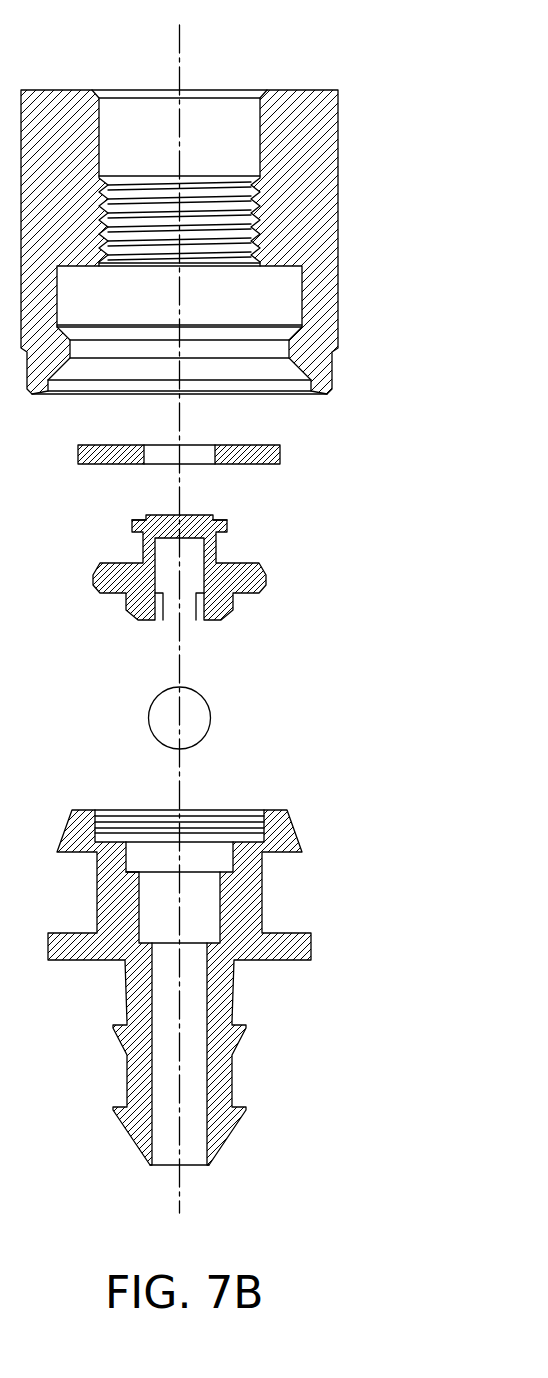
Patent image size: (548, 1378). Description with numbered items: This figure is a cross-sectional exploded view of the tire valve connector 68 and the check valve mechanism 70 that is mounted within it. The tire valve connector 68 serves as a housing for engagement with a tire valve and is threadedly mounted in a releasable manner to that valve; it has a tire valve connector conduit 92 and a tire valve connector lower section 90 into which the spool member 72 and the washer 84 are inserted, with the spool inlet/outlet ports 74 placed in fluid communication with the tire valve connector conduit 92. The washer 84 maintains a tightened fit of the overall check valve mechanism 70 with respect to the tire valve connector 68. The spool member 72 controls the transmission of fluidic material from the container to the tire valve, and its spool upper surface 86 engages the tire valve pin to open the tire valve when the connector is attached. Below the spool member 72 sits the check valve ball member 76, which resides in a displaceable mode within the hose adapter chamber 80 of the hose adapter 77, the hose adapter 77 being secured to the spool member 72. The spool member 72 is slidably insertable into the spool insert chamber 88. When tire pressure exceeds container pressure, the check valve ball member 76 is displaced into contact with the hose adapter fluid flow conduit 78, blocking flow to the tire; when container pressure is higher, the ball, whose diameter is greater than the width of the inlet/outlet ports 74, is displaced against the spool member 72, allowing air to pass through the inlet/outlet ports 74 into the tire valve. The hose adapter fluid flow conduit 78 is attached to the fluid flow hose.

The tire valve connector 68 is at (223, 219).
The tire valve connector conduit 92 is at (259, 125).
The tire valve connector lower section 90 is at (338, 348).
The check valve mechanism 70 is at (377, 440).
The washer 84 is at (281, 452).
The spool member 72 is at (198, 568).
The spool upper surface 86 is at (158, 517).
The inlet/outlet ports 74 is at (197, 553).
The check valve ball member 76 is at (210, 718).
The hose adapter 77 is at (193, 1005).
The hose adapter chamber 80 is at (219, 902).
The spool insert chamber 88 is at (127, 857).
The hose adapter fluid flow conduit 78 is at (205, 1113).